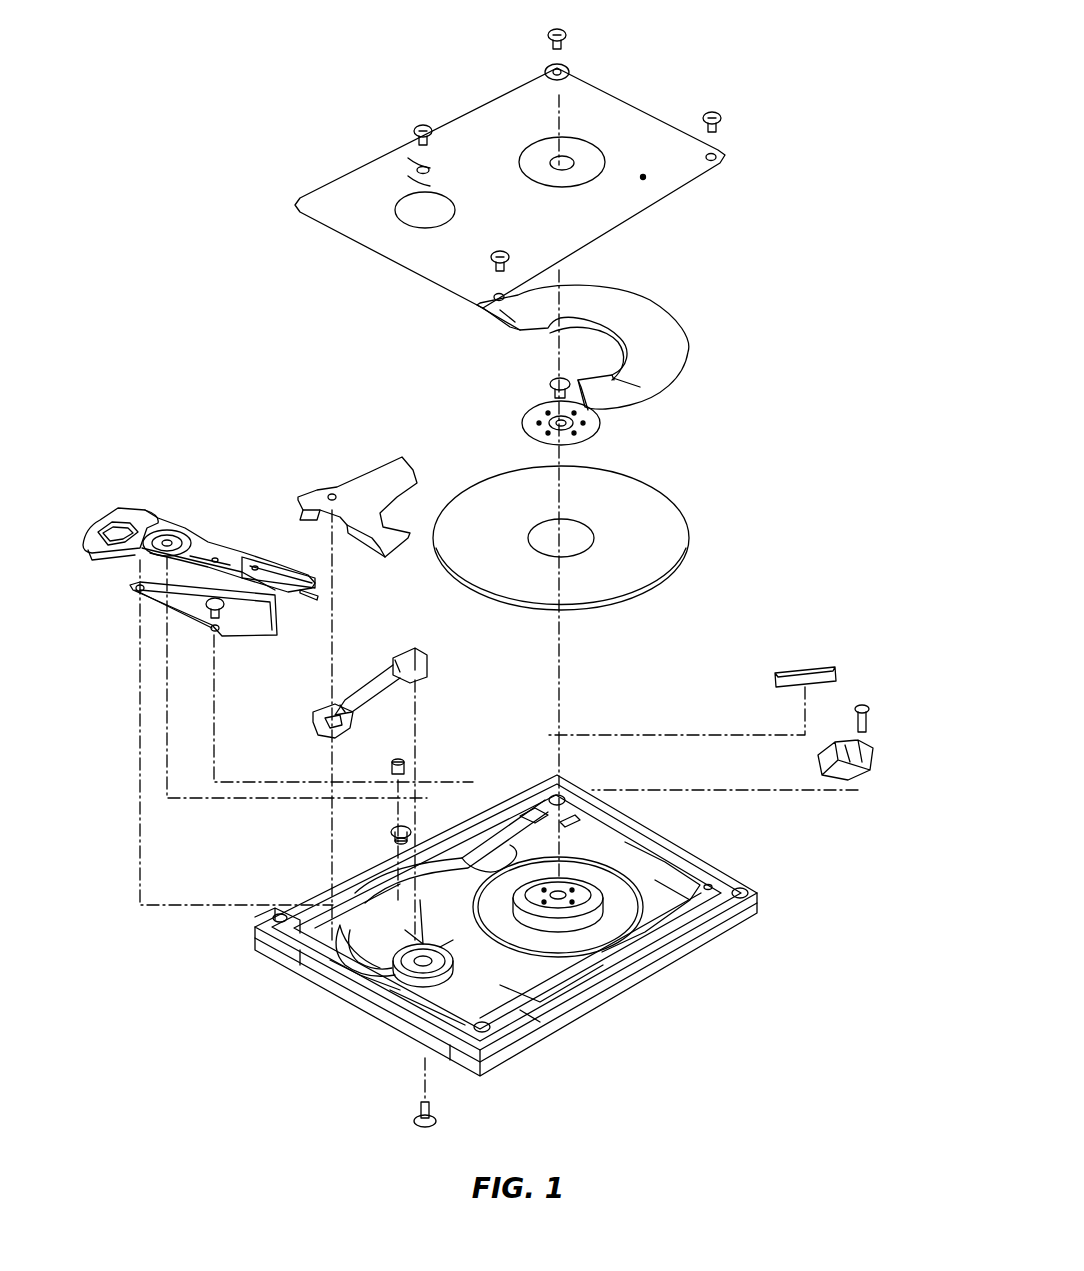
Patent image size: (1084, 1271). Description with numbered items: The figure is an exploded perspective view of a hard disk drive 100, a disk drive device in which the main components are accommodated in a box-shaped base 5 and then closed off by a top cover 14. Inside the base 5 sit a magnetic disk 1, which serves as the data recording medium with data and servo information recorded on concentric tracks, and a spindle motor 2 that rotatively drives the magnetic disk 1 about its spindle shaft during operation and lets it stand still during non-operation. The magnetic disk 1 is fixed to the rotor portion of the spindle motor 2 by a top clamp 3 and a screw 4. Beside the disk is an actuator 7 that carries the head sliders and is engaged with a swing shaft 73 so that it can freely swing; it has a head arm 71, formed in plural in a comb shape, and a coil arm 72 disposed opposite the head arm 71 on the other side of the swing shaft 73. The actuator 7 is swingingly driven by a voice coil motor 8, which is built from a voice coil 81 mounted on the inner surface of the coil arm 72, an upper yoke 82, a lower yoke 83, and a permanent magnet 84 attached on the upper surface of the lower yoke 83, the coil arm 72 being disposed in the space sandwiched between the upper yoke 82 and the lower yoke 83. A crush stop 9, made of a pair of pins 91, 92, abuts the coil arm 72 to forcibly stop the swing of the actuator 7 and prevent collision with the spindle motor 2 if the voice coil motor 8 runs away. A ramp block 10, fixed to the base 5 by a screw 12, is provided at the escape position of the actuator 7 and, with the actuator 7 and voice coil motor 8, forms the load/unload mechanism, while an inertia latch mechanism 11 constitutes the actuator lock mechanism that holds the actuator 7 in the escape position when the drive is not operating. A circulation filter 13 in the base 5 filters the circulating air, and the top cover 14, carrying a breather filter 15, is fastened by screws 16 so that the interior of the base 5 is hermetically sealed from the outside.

The hard disk drive 100 is at (322, 88).
The magnetic disk 1 is at (680, 550).
The spindle motor 2 is at (560, 912).
The top clamp 3 is at (592, 432).
The screw 4 is at (550, 387).
The base 5 is at (670, 970).
The actuator 7 is at (202, 532).
The voice coil motor 8 is at (142, 500).
The crush stop 9 is at (467, 720).
The ramp block 10 is at (867, 762).
The inertia latch mechanism 11 is at (385, 648).
The screw 12 is at (862, 703).
The circulation filter 13 is at (805, 668).
The top cover 14 is at (372, 168).
The breather filter 15 is at (682, 322).
The screws 16 is at (567, 36).
The head arm 71 is at (276, 552).
The coil arm 72 is at (90, 560).
The swing shaft 73 is at (422, 1112).
The voice coil 81 is at (107, 527).
The upper yoke 82 is at (380, 467).
The lower yoke 83 is at (342, 957).
The permanent magnet 84 is at (380, 970).
The pin 91 is at (405, 760).
The pin 92 is at (418, 817).